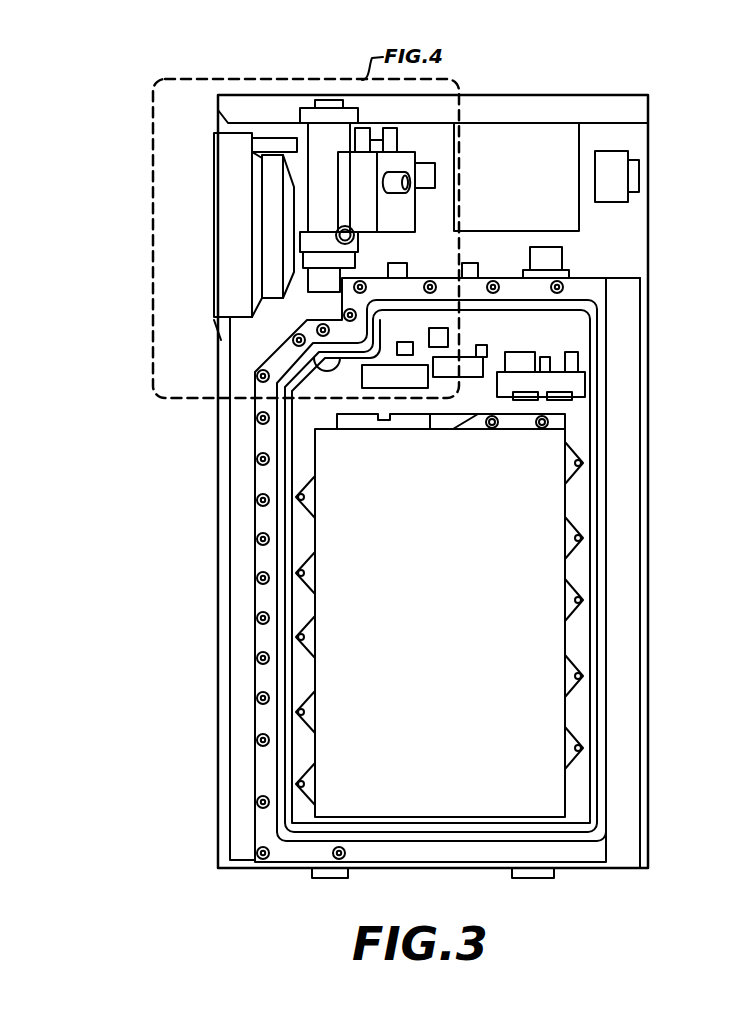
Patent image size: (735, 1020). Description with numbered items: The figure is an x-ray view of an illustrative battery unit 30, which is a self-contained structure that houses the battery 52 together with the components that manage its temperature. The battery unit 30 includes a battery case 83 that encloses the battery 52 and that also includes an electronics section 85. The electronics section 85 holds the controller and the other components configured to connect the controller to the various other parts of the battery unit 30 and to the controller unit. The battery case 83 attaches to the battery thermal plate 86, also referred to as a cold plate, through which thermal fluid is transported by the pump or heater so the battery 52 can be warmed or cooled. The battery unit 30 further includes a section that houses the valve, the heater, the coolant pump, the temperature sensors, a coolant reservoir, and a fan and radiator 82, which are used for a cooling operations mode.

The battery unit 30 is at (668, 80).
The fan and radiator 82 is at (230, 225).
The battery case 83 is at (593, 796).
The electronics section 85 is at (568, 335).
The battery thermal plate 86 is at (553, 422).
The battery 52 is at (552, 510).